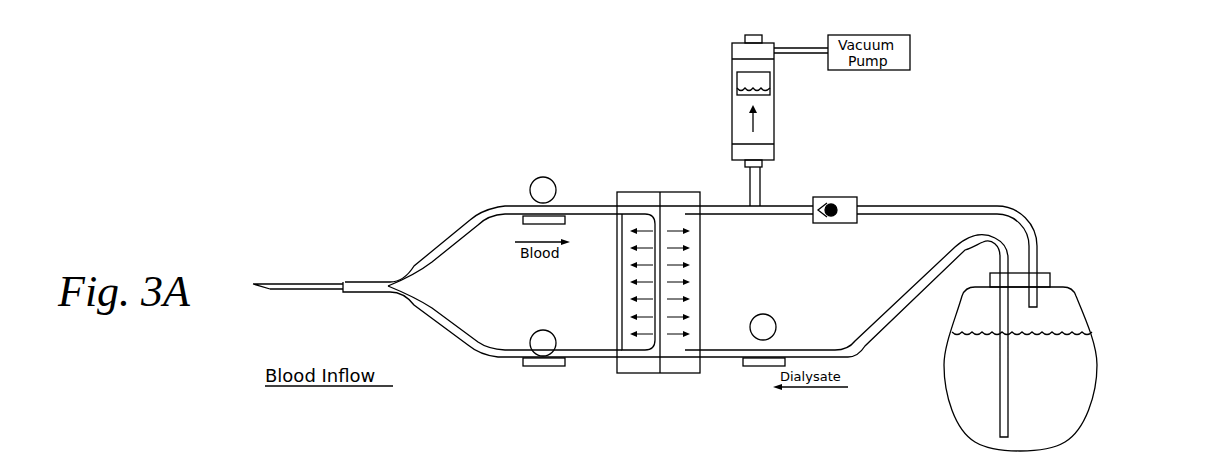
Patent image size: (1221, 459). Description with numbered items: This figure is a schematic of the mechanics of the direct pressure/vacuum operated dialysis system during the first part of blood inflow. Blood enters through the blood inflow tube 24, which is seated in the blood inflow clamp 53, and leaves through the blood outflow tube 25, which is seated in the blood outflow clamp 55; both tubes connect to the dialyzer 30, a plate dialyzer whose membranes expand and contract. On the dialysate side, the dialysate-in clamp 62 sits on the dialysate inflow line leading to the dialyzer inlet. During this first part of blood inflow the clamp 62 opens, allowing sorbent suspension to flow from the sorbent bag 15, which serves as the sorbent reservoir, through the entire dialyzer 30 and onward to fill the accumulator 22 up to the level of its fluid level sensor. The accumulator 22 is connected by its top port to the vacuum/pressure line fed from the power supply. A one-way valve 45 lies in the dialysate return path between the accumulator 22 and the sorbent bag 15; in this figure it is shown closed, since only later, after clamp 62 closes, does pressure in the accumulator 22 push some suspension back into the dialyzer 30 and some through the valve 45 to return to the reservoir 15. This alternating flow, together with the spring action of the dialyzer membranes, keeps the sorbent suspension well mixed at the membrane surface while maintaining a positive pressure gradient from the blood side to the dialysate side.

The sorbent bag 15 is at (1097, 365).
The accumulator 22 is at (732, 100).
The blood inflow tube 24 is at (422, 258).
The blood outflow tube 25 is at (432, 318).
The dialyzer 30 is at (657, 375).
The one-way valve 45 is at (835, 196).
The blood inflow clamp 53 is at (537, 177).
The blood outflow clamp 55 is at (530, 367).
The dialysate-in clamp 62 is at (757, 367).